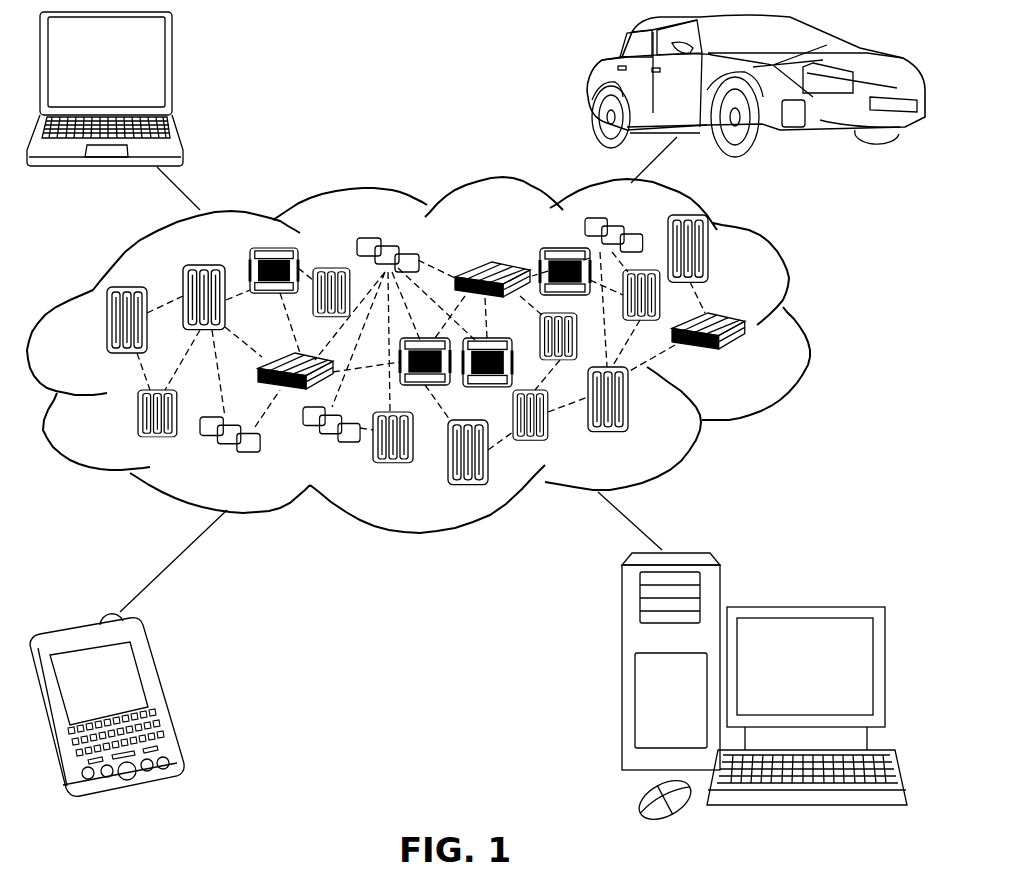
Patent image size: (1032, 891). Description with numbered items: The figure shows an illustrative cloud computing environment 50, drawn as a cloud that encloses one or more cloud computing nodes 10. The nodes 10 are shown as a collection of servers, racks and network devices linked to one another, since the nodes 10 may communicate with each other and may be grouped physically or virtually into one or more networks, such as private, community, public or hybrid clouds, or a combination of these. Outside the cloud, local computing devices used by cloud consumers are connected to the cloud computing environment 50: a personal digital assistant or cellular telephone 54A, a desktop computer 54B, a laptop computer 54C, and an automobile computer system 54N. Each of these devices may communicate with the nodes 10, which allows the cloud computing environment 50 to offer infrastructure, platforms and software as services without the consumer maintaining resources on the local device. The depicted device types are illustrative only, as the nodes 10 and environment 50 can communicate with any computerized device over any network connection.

The cloud computing nodes 10 is at (755, 362).
The cloud computing environment 50 is at (803, 323).
The personal digital assistant (PDA) or cellular telephone 54A is at (163, 697).
The desktop computer 54B is at (802, 607).
The laptop computer 54C is at (172, 70).
The automobile computer system 54N is at (592, 85).